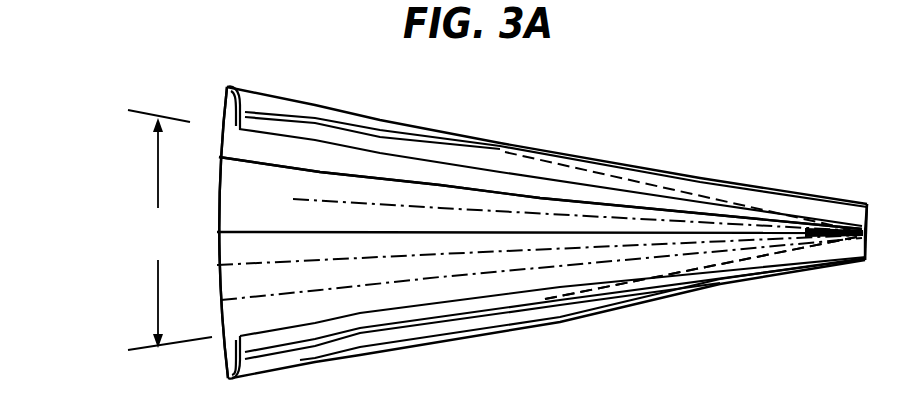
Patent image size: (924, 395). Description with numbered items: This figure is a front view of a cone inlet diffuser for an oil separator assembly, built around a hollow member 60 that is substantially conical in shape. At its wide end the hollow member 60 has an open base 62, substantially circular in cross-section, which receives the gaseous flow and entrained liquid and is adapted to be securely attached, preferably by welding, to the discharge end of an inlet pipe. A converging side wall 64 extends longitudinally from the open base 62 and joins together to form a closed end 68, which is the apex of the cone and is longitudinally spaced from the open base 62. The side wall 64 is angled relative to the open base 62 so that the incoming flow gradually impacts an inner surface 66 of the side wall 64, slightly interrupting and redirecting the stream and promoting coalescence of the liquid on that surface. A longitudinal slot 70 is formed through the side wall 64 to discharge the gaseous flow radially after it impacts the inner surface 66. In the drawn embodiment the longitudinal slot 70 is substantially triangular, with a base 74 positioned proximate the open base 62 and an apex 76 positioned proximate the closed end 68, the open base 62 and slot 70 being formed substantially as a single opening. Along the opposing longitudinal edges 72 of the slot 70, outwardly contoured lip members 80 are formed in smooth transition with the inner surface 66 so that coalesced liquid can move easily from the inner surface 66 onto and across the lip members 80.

The hollow member 60 is at (461, 335).
The open base 62 is at (190, 241).
The converging side wall 64 is at (310, 102).
The inner surface 66 is at (223, 112).
The closed end 68 is at (866, 238).
The longitudinal slot 70 is at (458, 190).
The opposing longitudinal edges 72 is at (640, 275).
The base 74 is at (170, 230).
The apex 76 is at (866, 232).
The outwardly contoured lip members 80 is at (765, 198).